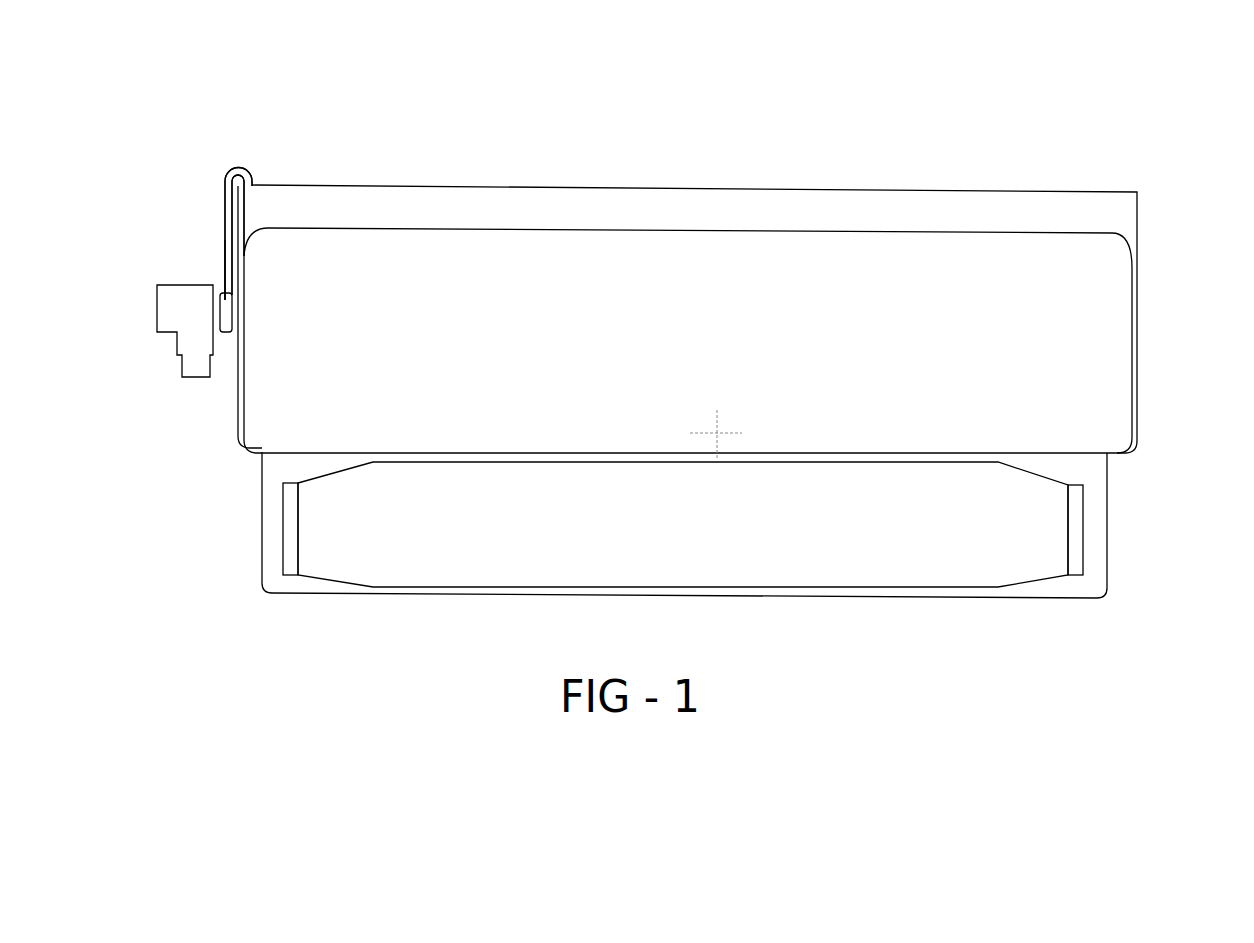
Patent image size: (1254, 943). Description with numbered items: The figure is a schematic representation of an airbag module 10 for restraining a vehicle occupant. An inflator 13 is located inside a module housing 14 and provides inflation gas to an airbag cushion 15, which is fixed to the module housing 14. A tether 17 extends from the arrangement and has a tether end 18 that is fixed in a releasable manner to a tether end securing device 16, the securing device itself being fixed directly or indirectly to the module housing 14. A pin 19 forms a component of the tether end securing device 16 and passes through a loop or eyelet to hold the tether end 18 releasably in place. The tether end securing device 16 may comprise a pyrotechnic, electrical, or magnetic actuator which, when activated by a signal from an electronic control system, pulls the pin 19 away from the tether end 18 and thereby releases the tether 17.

The airbag module 10 is at (663, 143).
The inflator 13 is at (813, 568).
The module housing 14 is at (1107, 535).
The airbag cushion 15 is at (1035, 278).
The tether end securing device 16 is at (167, 332).
The tether 17 is at (240, 166).
The tether end 18 is at (228, 333).
The pin 19 is at (223, 290).